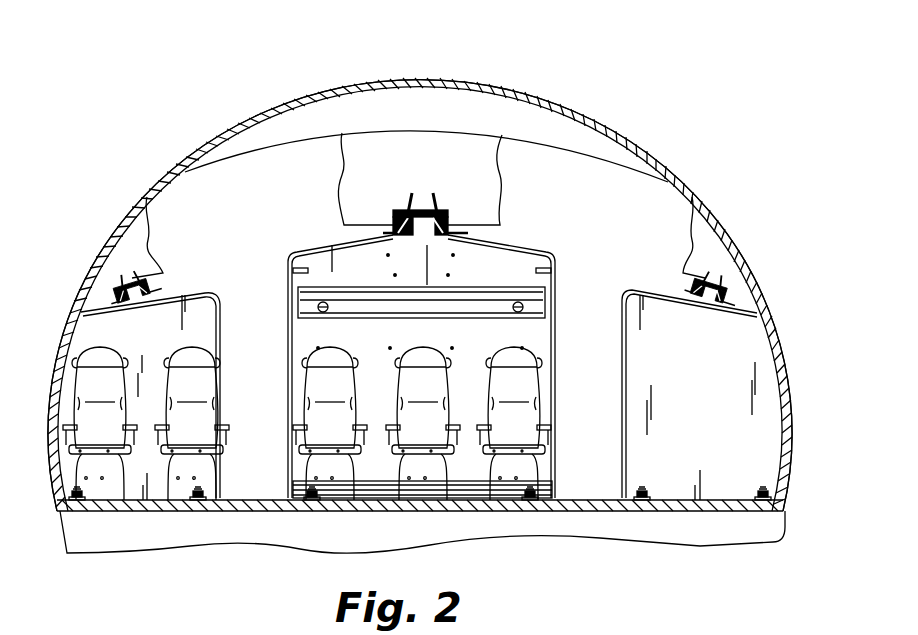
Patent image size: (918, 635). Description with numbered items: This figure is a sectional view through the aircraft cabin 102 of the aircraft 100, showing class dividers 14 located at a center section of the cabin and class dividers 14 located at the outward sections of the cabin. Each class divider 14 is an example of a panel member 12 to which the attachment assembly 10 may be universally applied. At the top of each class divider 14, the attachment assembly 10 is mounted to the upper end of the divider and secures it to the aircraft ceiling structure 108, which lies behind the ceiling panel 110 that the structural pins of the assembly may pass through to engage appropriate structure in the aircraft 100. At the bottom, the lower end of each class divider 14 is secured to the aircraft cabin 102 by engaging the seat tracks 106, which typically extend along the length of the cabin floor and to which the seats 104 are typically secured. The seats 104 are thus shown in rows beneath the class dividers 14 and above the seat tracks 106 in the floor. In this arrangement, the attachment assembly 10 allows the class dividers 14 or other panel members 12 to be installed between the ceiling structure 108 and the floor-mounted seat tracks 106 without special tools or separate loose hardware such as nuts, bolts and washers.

The aircraft 100 is at (641, 86).
The aircraft cabin 102 is at (225, 200).
The aircraft ceiling structure 108 is at (114, 238).
The ceiling panel 110 is at (295, 147).
The attachment assembly 10 is at (448, 215).
The panel member 12 is at (156, 336).
The class divider 14 is at (519, 273).
The seats 104 is at (307, 423).
The seat tracks 106 is at (312, 502).